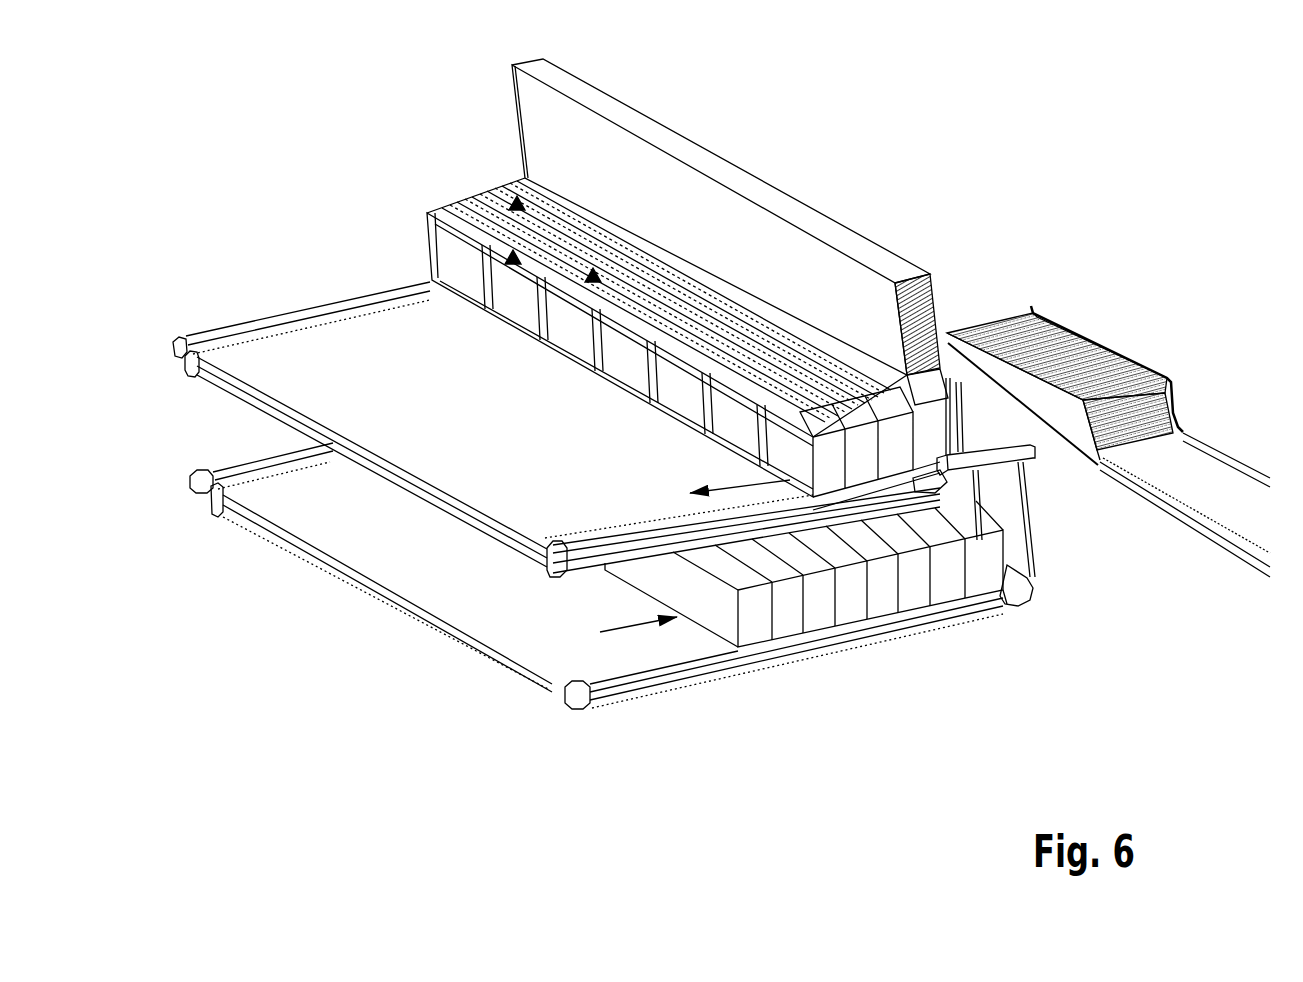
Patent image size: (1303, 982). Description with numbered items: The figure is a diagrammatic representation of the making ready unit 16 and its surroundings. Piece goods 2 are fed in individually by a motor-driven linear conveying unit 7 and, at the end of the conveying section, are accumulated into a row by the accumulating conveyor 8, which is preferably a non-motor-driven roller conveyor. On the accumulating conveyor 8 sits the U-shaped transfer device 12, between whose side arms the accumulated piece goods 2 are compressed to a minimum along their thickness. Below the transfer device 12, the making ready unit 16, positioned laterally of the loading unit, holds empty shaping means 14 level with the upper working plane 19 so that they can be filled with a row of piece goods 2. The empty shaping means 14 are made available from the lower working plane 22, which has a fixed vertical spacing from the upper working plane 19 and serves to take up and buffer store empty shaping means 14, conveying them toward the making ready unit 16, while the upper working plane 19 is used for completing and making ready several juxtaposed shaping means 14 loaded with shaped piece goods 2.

The piece goods 2 is at (593, 269).
The linear conveying unit 7 is at (1240, 478).
The accumulating conveyor 8 is at (1113, 337).
The transfer device 12 is at (840, 217).
The shaping means 14 is at (855, 612).
The making ready unit 16 is at (1022, 510).
The upper working plane 19 is at (228, 398).
The lower working plane 22 is at (447, 658).